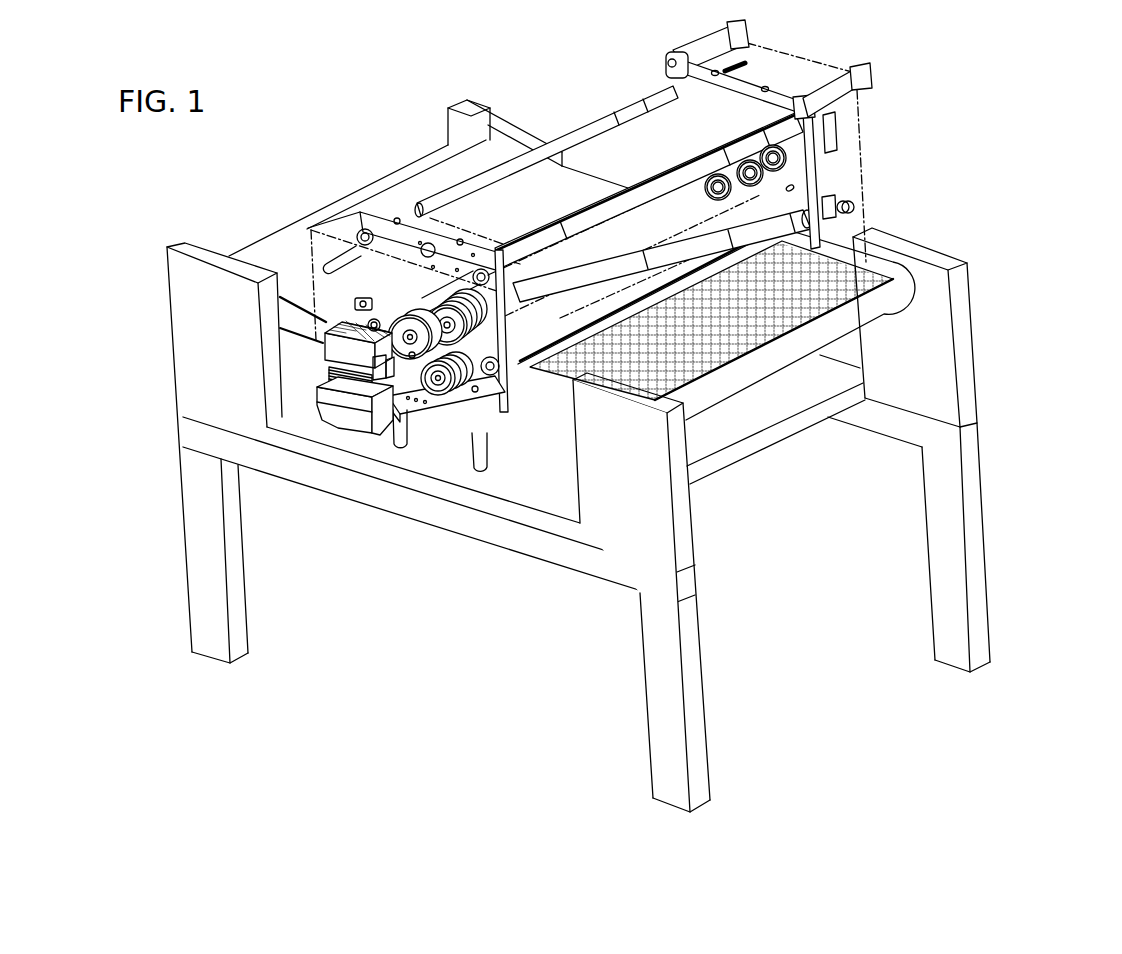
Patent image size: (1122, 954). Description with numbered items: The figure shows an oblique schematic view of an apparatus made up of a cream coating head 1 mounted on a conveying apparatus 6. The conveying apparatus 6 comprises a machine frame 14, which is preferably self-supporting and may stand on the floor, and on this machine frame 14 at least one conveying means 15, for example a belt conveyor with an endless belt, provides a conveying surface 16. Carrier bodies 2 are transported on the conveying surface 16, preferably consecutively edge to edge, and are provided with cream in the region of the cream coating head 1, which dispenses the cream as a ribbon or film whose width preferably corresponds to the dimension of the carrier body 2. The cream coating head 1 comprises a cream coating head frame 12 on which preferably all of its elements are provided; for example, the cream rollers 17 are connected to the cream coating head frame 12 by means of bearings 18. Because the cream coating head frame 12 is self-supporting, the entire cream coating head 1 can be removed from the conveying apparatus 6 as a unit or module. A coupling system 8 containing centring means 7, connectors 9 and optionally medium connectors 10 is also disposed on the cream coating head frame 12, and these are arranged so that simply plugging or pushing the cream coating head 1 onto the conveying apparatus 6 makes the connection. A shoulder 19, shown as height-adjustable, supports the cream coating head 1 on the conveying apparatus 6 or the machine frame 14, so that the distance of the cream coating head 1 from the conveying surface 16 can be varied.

The cream coating head 1 is at (553, 338).
The carrier body 2 is at (733, 326).
The conveying apparatus 6 is at (625, 499).
The centring means 7 is at (375, 400).
The coupling system 8 is at (330, 372).
The connectors 9 is at (335, 489).
The medium connectors 10 is at (338, 405).
The cream coating head frame 12 is at (495, 386).
The machine frame 14 is at (625, 520).
The conveying means 15 is at (848, 327).
The conveying surface 16 is at (517, 210).
The cream rollers 17 is at (663, 217).
The bearings 18 is at (783, 170).
The shoulder 19 is at (470, 395).